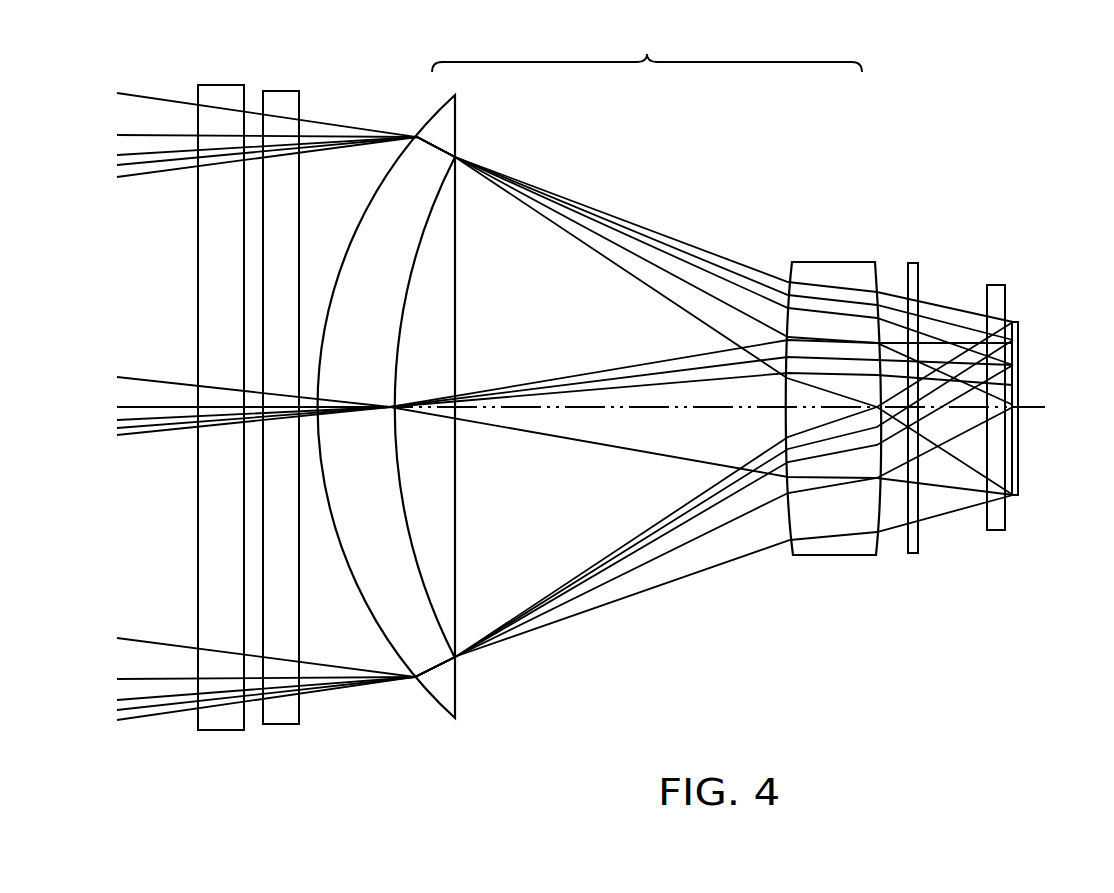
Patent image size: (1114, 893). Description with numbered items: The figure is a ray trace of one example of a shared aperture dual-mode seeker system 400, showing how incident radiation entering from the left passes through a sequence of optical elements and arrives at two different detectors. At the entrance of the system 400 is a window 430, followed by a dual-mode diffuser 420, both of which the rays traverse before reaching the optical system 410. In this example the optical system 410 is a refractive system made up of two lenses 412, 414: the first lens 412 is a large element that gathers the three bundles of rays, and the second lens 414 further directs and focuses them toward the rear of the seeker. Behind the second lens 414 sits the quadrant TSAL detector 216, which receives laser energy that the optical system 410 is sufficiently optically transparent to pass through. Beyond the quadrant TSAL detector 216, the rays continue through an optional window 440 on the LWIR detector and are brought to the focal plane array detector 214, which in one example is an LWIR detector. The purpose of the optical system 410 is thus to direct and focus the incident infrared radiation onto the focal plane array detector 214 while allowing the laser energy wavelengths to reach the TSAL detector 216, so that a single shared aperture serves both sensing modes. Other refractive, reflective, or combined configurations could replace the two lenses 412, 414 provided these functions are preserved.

The shared aperture dual-mode seeker system 400 is at (984, 145).
The optical system 410 is at (647, 50).
The lens 412 is at (458, 680).
The lens 414 is at (840, 557).
The dual-mode diffuser 420 is at (291, 91).
The window 430 is at (221, 85).
The quadrant TSAL detector 216 is at (913, 555).
The window on the LWIR detector 440 is at (996, 532).
The focal plane array detector 214 is at (1020, 448).